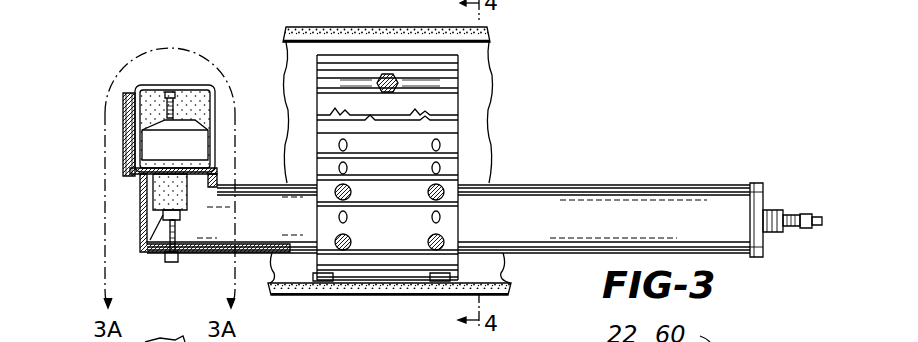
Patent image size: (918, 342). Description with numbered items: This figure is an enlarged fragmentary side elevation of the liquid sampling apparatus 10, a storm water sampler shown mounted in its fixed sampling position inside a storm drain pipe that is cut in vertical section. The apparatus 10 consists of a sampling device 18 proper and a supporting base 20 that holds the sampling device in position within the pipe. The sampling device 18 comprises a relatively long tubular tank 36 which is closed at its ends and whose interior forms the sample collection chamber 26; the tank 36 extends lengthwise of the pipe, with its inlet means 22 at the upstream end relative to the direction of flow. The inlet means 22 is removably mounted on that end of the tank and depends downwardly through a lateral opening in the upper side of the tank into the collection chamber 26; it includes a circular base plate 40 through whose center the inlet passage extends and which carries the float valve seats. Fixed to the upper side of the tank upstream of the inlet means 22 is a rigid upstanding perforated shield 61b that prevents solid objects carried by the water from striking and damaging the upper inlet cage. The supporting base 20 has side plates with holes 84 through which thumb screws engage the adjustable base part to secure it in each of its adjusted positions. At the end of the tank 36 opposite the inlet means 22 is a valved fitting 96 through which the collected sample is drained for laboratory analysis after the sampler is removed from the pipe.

The liquid sampling apparatus 10 is at (566, 120).
The sampling device 18 is at (613, 174).
The supporting base 20 is at (328, 23).
The inlet means 22 is at (118, 145).
The sample collection chamber 26 is at (213, 227).
The tubular tank 36 is at (526, 233).
The circular base plate 40 is at (215, 160).
The perforated shield 61b is at (124, 113).
The holes 84 is at (425, 168).
The valved fitting 96 is at (789, 210).